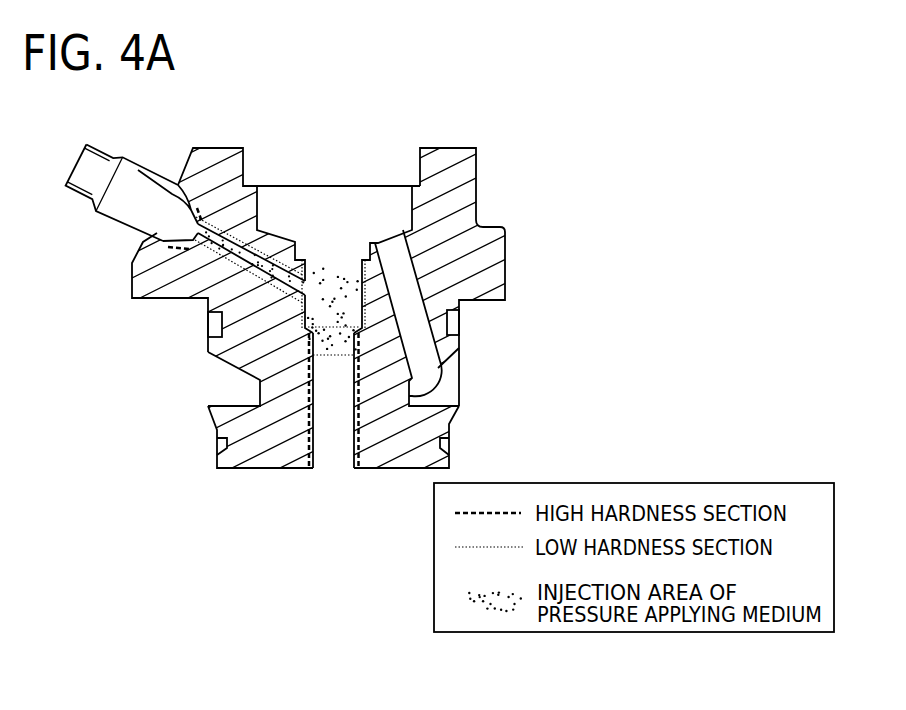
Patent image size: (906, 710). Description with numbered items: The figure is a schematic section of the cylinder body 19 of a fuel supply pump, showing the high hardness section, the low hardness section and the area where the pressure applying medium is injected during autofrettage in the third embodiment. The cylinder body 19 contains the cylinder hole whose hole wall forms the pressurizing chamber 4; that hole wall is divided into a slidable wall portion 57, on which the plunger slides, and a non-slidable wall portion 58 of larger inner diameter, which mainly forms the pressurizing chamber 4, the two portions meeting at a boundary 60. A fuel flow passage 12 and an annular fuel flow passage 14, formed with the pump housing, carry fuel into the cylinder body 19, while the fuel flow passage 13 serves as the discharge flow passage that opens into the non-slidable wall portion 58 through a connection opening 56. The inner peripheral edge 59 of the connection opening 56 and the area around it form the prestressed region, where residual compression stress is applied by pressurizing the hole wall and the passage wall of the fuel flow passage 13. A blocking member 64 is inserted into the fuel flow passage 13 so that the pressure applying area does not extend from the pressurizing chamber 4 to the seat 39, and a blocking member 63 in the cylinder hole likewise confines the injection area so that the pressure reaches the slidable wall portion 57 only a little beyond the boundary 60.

The pressurizing chamber 4 is at (347, 273).
The fuel flow passage 12 is at (413, 316).
The fuel flow passage 13 is at (216, 270).
The annular fuel flow passage 14 is at (447, 380).
The cylinder body 19 is at (456, 204).
The seat 39 is at (190, 219).
The connection opening 56 is at (312, 298).
The slidable wall portion 57 is at (356, 424).
The non-slidable wall portion 58 is at (352, 283).
The inner peripheral edge 59 is at (309, 292).
The boundary 60 is at (252, 380).
The blocking member 63 is at (322, 398).
The blocking member 64 is at (152, 211).